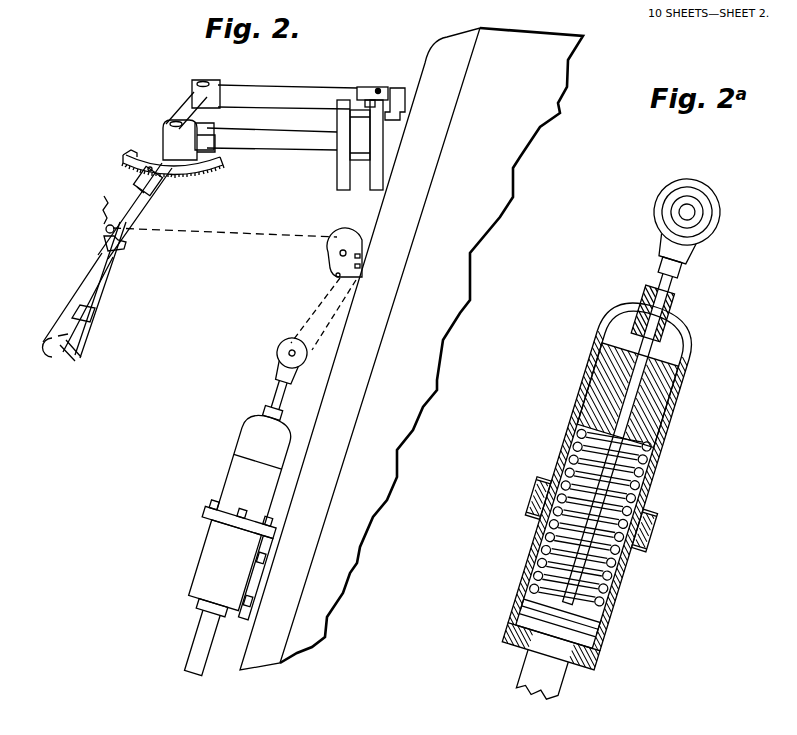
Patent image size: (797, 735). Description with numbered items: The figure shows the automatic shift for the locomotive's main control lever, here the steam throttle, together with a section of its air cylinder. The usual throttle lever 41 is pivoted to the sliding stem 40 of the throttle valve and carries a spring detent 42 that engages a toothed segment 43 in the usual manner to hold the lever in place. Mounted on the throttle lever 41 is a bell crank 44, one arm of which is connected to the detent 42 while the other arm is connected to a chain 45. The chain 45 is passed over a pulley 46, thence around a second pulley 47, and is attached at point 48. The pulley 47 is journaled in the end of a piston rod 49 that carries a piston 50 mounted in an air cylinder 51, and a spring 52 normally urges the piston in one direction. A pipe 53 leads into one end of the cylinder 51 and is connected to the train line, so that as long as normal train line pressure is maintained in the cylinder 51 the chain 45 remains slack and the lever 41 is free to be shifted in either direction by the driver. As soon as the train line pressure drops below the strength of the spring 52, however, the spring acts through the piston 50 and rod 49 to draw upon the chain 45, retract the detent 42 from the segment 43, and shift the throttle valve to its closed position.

In FIG. 2, the sliding stem 40 is at (315, 152).
In FIG. 2, the throttle lever 41 is at (90, 278).
In FIG. 2, the spring detent 42 is at (152, 202).
In FIG. 2, the segment 43 is at (214, 174).
In FIG. 2, the bell crank 44 is at (123, 245).
In FIG. 2, the chain 45 is at (267, 233).
In FIG. 2, the pulley 46 is at (327, 258).
In FIG. 2, the pulley 47 is at (277, 348).
In FIG. 2A, the pulley 47 is at (656, 212).
In FIG. 2, the attachment point 48 is at (333, 273).
In FIG. 2, the piston rod 49 is at (277, 392).
In FIG. 2A, the piston rod 49 is at (660, 287).
In FIG. 2A, the piston 50 is at (590, 647).
In FIG. 2, the air cylinder 51 is at (202, 578).
In FIG. 2A, the air cylinder 51 is at (527, 580).
In FIG. 2A, the spring 52 is at (630, 483).
In FIG. 2, the pipe 53 is at (193, 675).
In FIG. 2A, the pipe 53 is at (518, 690).